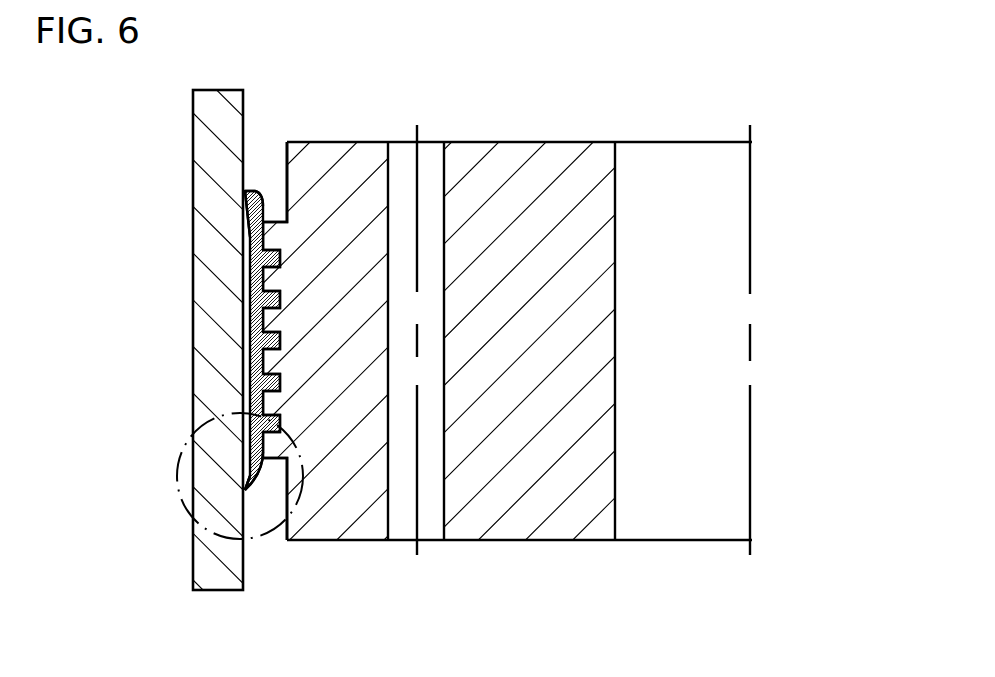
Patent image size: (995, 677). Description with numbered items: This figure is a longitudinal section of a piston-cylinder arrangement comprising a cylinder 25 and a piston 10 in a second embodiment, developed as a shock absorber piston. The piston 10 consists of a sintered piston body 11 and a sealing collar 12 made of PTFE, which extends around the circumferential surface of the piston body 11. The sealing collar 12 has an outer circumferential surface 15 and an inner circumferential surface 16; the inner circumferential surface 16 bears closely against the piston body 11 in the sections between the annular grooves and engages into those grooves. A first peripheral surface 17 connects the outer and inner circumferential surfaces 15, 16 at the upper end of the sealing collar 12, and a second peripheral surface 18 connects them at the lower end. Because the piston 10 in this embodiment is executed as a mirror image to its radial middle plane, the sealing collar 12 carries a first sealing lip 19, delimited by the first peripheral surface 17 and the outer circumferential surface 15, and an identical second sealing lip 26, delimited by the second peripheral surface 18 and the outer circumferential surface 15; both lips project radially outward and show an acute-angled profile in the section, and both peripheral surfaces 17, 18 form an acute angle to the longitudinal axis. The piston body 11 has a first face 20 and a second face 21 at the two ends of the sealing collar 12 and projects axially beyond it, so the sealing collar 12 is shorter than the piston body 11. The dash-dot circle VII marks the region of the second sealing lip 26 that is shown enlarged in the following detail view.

The piston 10 is at (451, 332).
The piston body 11 is at (507, 331).
The sealing collar 12 is at (230, 343).
The outer circumferential surface 15 is at (250, 228).
The inner circumferential surface 16 is at (266, 208).
The first peripheral surface 17 is at (249, 189).
The second peripheral surface 18 is at (248, 493).
The first sealing lip 19 is at (244, 191).
The first face 20 is at (473, 142).
The second face 21 is at (565, 540).
The cylinder 25 is at (192, 558).
The second sealing lip 26 is at (243, 490).
The detail circle VII is at (178, 485).